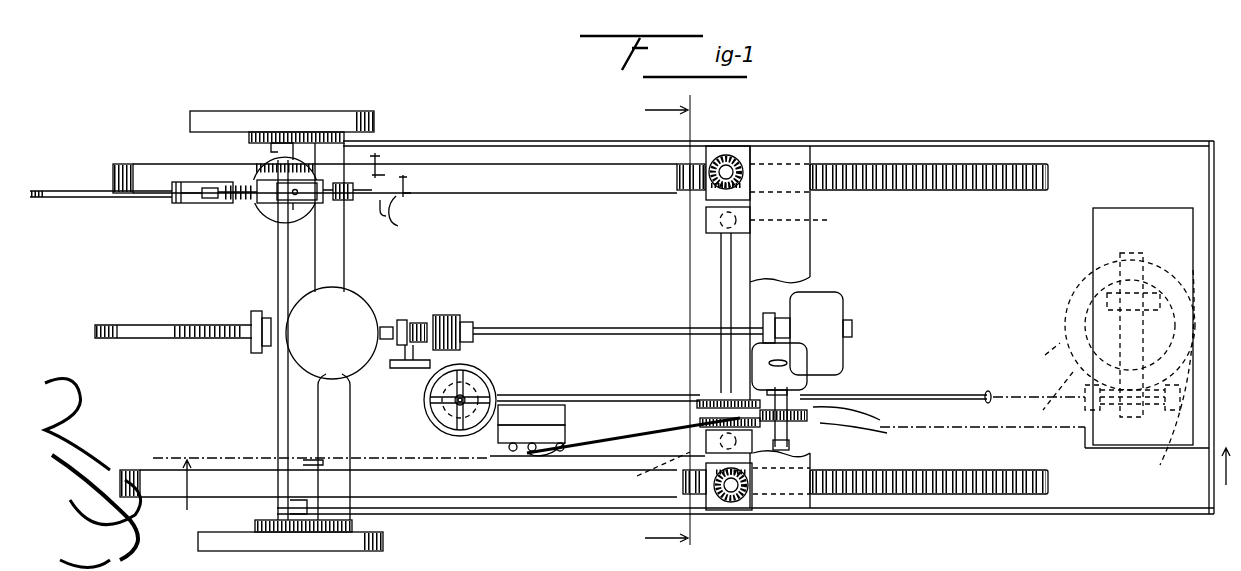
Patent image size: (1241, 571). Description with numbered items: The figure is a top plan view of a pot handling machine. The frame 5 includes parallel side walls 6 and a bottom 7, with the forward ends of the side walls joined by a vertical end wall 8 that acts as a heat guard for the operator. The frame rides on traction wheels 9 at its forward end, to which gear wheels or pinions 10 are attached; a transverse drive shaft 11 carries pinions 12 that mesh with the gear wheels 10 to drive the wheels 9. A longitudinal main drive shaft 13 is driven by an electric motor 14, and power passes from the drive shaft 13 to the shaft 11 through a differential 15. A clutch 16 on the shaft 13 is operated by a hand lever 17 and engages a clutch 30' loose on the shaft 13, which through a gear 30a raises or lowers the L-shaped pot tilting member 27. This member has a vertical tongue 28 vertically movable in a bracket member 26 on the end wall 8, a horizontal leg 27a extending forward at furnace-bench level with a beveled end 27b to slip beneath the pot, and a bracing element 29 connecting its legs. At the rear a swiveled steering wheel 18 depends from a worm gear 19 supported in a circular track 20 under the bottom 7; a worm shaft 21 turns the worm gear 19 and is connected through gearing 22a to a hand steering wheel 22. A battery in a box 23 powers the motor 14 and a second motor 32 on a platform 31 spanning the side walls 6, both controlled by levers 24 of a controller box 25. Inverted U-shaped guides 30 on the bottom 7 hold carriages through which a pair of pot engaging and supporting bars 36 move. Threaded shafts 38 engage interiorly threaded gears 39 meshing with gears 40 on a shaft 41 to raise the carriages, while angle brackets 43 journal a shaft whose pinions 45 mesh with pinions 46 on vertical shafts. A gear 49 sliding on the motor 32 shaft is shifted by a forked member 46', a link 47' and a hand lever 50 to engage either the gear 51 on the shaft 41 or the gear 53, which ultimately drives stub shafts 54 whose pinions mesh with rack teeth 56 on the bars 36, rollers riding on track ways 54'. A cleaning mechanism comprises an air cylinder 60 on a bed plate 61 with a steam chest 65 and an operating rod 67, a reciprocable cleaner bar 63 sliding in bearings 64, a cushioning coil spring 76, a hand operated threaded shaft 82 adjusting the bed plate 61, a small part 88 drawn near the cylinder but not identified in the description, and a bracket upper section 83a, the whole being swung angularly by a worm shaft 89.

The frame 5 is at (437, 533).
The side walls 6 is at (1058, 141).
The bottom 7 is at (1030, 507).
The vertical end wall 8 is at (278, 432).
The traction wheels 9 is at (323, 560).
The gear wheels or pinions 10 is at (270, 132).
The drive shaft 11 is at (335, 417).
The gear wheels or pinions 12 is at (327, 133).
The main drive shaft 13 is at (595, 330).
The electric motor 14 is at (835, 292).
The differential 15 is at (345, 322).
The clutch 16 is at (443, 313).
The hand lever 17 is at (407, 365).
The swiveled steering wheel 18 is at (1170, 266).
The worm gear 19 is at (1020, 427).
The circular track 20 is at (1162, 463).
The worm shaft 21 is at (953, 393).
The hand steering wheel 22 is at (488, 380).
The gearing 22a is at (482, 373).
The box 23 is at (1117, 243).
The levers 24 is at (565, 415).
The controller box 25 is at (567, 450).
The bracket member 26 is at (262, 378).
The L-shaped pot tilting member 27 is at (213, 340).
The horizontal leg 27a is at (163, 338).
The beveled forward end 27b is at (110, 324).
The vertical tongue 28 is at (258, 342).
The reinforcing or bracing element 29 is at (190, 325).
The inverted U-shaped guides 30 is at (728, 338).
The clutch 30' is at (478, 309).
The gear 30a is at (460, 316).
The shell or platform 31 is at (790, 250).
The motor 32 is at (795, 380).
The pot engaging and supporting bars 36 is at (557, 185).
The threaded shafts 38 is at (733, 167).
The interiorly threaded gears 39 is at (752, 165).
The gears 40 is at (683, 192).
The shaft 41 is at (722, 290).
The angle brackets 43 is at (710, 228).
The pinions 45 is at (808, 413).
The pinions 46 is at (732, 350).
The forked member 46' is at (758, 564).
The link 47' is at (864, 438).
The gear 49 is at (864, 423).
The hand lever 50 is at (565, 432).
The gear 51 is at (705, 397).
The gear 53 is at (633, 447).
The stub shaft 54 is at (865, 463).
The track ways 54' is at (862, 149).
The rack teeth 56 is at (955, 187).
The air cylinder 60 is at (263, 205).
The bed plate 61 is at (193, 207).
The cleaner bar 63 is at (98, 197).
The bearings or guides 64 is at (178, 182).
The steam chest 65 is at (308, 188).
The operating rod 67 is at (407, 200).
The expansible coil spring 76 is at (380, 187).
The threaded shaft 82 is at (415, 222).
The upper section of bracket 83a is at (293, 207).
The hook 88 is at (383, 224).
The worm shaft 89 is at (373, 160).